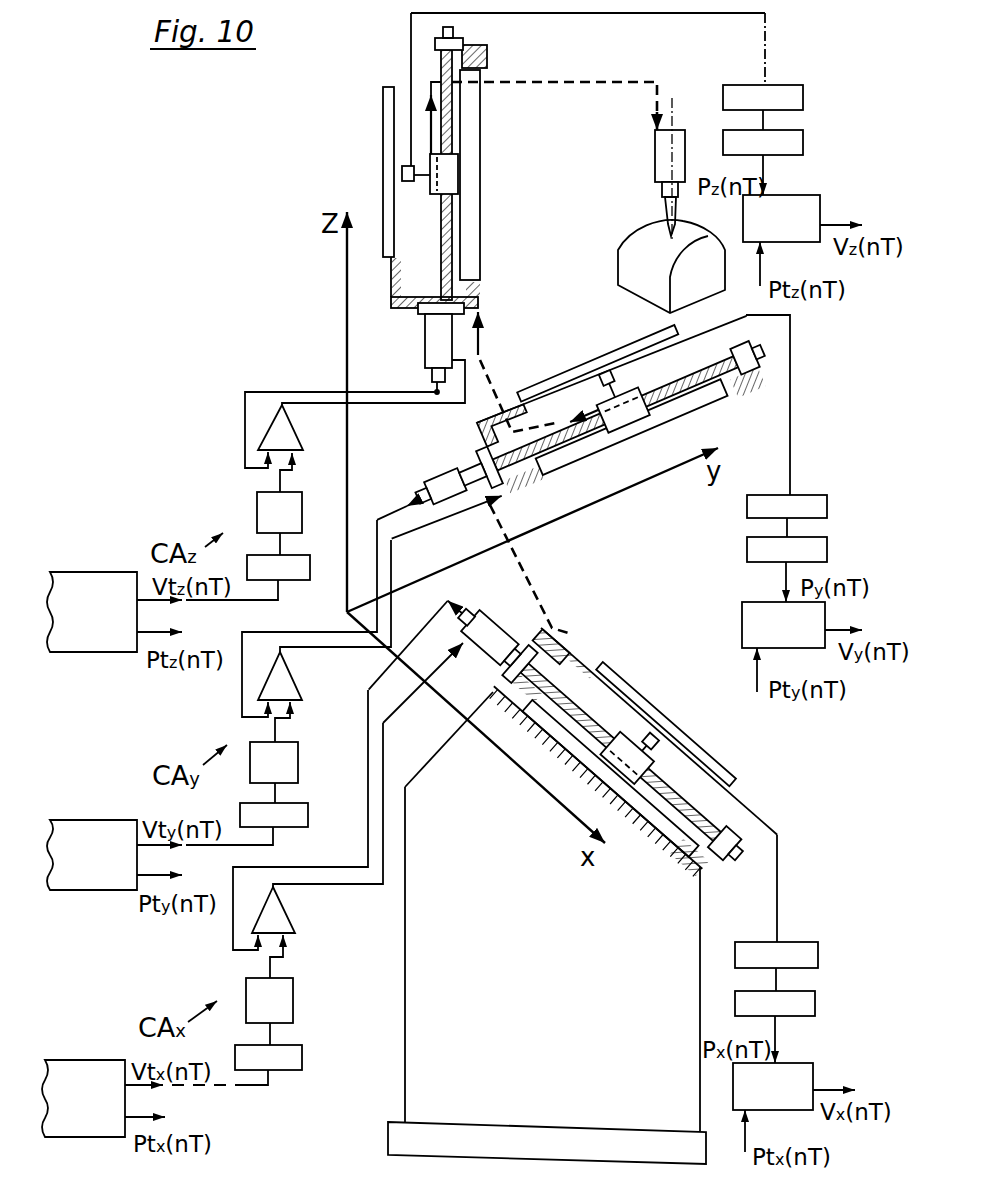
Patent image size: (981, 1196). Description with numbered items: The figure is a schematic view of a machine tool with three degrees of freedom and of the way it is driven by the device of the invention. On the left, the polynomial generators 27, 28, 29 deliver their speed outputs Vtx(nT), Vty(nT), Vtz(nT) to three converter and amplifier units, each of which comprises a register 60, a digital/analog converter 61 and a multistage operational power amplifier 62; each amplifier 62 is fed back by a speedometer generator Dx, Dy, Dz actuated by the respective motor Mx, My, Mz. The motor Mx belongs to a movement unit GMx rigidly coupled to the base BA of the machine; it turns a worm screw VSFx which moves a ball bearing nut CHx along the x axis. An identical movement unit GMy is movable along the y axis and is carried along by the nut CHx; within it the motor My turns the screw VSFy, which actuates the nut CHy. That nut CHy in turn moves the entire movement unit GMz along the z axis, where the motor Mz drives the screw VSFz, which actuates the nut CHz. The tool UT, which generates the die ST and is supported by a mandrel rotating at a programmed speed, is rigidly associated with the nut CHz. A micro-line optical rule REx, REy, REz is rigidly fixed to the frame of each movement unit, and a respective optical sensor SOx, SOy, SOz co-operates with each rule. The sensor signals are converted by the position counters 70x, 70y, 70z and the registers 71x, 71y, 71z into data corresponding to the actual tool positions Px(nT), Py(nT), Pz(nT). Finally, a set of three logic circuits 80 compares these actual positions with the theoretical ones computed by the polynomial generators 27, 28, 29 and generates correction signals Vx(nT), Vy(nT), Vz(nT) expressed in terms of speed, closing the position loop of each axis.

The polynomial generator 27 is at (77, 1067).
The polynomial generator 28 is at (82, 825).
The polynomial generator 29 is at (86, 587).
The register 60 is at (281, 569).
The digital/analog converter 61 is at (293, 517).
The multistage operational power amplifier 62 is at (284, 430).
The position counter 70z is at (790, 95).
The register 71z is at (792, 143).
The position counter 70y is at (815, 503).
The register 71y is at (815, 549).
The position counter 70x is at (832, 903).
The register 71x is at (787, 1004).
The logic circuit 80 is at (798, 208).
The movement unit GMz is at (360, 129).
The micro-line optical rule REz is at (383, 163).
The optical sensor SOz is at (408, 182).
The ball bearing nut CHz is at (453, 175).
The worm screw VSFz is at (447, 230).
The motor Mz is at (428, 337).
The speedometer generator Dz is at (430, 373).
The tool UT is at (641, 205).
The die ST is at (625, 238).
The movement unit GMy is at (563, 336).
The micro-line optical rule REy is at (630, 350).
The optical sensor SOy is at (600, 383).
The ball bearing nut CHy is at (628, 426).
The worm screw VSFy is at (712, 395).
The motor My is at (445, 475).
The speedometer generator Dy is at (422, 495).
The movement unit GMx is at (577, 622).
The micro-line optical rule REx is at (650, 697).
The optical sensor SOx is at (659, 737).
The ball bearing nut CHx is at (627, 748).
The worm screw VSFx is at (712, 827).
The motor Mx is at (477, 642).
The speedometer generator Dx is at (466, 614).
The base BA is at (547, 928).